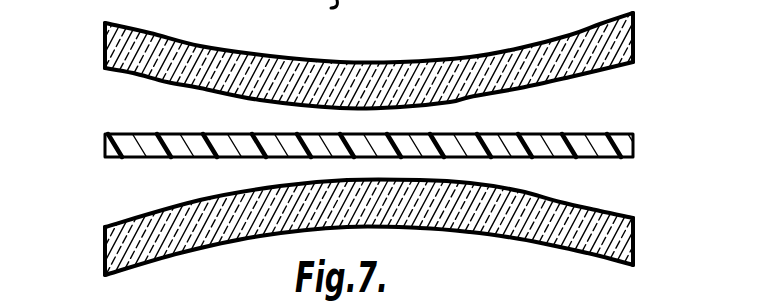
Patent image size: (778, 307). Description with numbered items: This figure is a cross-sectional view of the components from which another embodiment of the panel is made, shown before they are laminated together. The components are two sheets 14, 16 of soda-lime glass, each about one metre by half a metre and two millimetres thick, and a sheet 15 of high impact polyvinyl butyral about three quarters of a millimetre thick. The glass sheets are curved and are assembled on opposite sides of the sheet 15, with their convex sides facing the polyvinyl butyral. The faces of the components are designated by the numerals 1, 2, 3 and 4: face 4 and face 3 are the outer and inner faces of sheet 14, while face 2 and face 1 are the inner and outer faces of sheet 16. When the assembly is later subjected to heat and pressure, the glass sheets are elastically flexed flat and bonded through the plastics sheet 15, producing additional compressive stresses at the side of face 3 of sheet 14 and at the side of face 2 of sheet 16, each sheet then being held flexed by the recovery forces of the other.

The face 1 is at (575, 250).
The face 2 is at (582, 202).
The face 3 is at (567, 82).
The face 4 is at (563, 37).
The glass sheet 14 is at (147, 53).
The sheet of polyvinyl butyral 15 is at (140, 152).
The glass sheet 16 is at (157, 238).